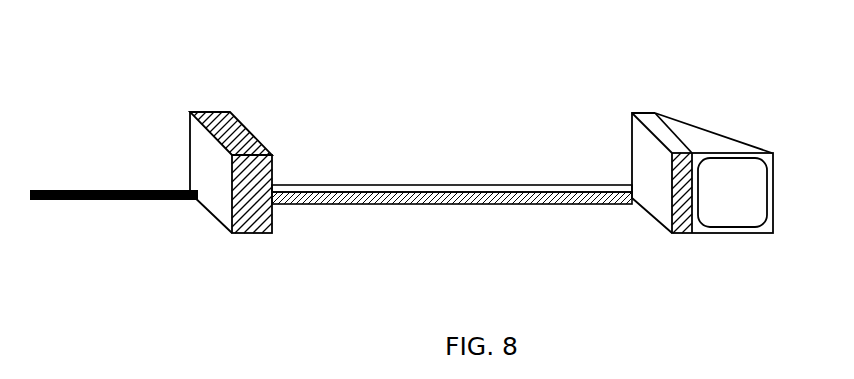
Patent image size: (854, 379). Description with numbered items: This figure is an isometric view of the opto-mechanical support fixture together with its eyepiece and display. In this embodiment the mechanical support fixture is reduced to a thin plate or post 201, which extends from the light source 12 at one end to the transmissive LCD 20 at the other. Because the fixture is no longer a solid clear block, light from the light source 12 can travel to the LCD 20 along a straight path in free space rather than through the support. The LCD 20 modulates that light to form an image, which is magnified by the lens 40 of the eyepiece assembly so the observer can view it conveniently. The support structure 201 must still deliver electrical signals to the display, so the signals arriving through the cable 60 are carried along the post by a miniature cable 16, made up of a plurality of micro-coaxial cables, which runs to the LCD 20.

The light source 12 is at (210, 172).
The cable 60 is at (97, 188).
The miniature cable 16 is at (335, 207).
The thin plate or post 201 is at (402, 188).
The transmissive LCD 20 is at (650, 127).
The lens 40 is at (748, 210).